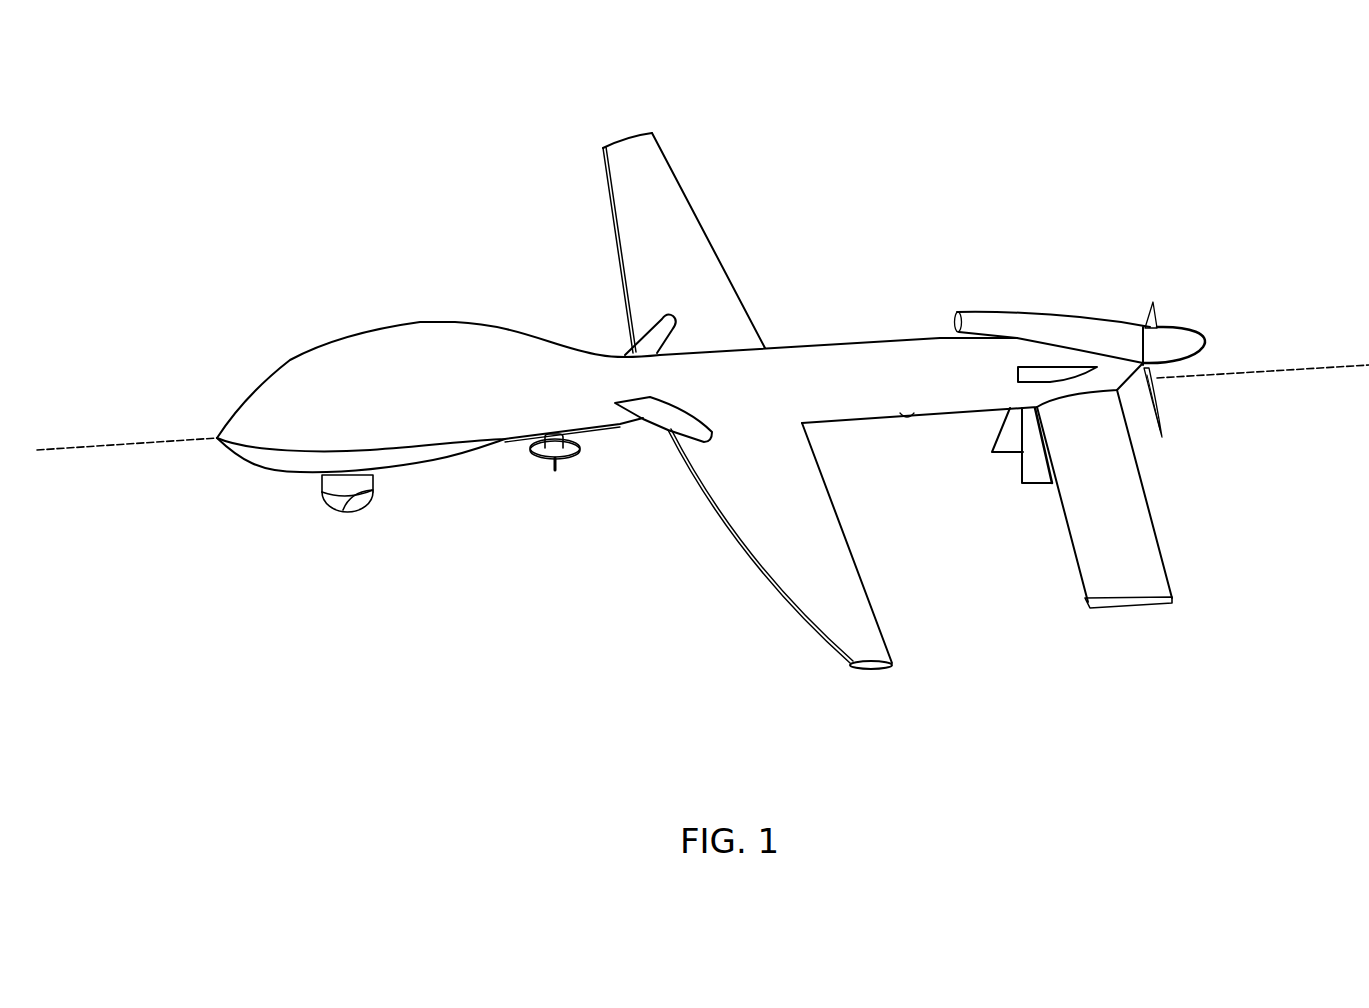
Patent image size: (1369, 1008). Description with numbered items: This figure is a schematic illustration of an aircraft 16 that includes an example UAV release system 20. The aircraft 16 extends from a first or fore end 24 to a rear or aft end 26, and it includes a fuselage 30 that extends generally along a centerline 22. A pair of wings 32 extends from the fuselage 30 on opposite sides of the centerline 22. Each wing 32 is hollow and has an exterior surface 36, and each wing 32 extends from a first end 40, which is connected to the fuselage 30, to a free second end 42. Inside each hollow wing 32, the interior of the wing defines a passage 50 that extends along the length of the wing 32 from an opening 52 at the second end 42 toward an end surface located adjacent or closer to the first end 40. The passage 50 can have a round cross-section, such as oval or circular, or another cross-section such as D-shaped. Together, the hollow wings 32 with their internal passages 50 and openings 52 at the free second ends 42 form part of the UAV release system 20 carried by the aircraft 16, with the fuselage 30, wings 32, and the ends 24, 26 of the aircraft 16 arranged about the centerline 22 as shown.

The aircraft 16 is at (905, 258).
The UAV release system 20 is at (786, 398).
The centerline 22 is at (1273, 370).
The fore end 24 is at (238, 479).
The aft end 26 is at (1177, 455).
The fuselage 30 is at (413, 418).
The wing 32 is at (743, 268).
The exterior surface 36 is at (678, 232).
The first end 40 is at (622, 337).
The second end 42 is at (590, 140).
The passage 50 is at (647, 200).
The opening 52 is at (625, 135).